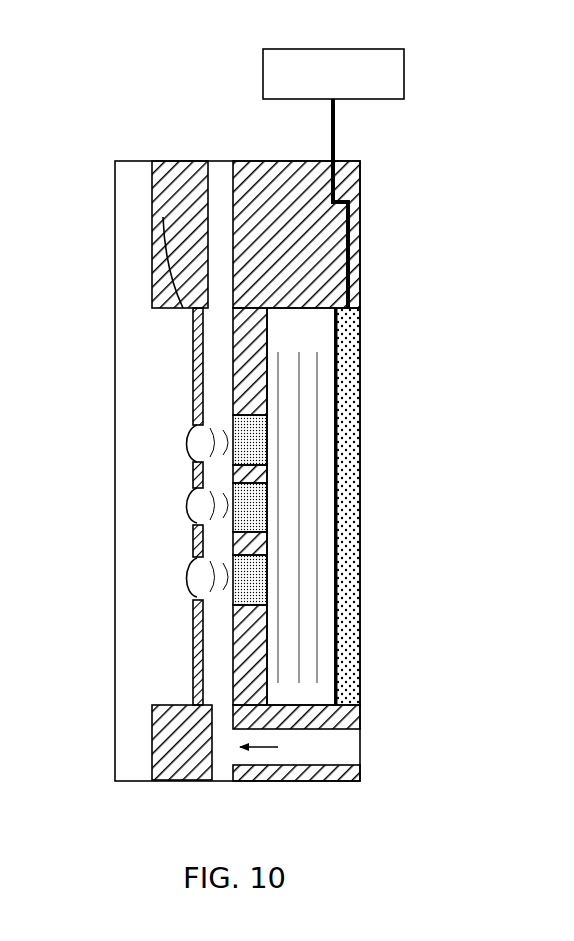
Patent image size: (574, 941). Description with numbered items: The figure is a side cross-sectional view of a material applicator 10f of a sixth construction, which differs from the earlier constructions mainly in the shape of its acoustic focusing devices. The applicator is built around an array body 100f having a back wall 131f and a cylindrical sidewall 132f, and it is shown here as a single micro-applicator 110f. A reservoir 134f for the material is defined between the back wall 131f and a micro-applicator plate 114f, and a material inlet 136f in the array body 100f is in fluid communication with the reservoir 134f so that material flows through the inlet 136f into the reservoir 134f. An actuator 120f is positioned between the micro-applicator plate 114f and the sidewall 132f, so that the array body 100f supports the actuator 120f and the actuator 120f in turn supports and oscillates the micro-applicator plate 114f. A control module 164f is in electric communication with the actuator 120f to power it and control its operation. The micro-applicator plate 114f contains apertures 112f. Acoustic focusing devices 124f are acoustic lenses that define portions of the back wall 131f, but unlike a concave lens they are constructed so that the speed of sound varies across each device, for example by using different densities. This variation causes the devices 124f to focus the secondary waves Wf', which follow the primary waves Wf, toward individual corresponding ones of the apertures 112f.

The material applicator 10f is at (133, 167).
The array body 100f is at (199, 159).
The micro-applicator 110f is at (163, 659).
The apertures 112f is at (193, 427).
The micro-applicator plate 114f is at (185, 372).
The actuator 120f is at (350, 375).
The acoustic focusing devices 124f is at (257, 431).
The back wall 131f is at (233, 648).
The sidewall 132f is at (187, 187).
The reservoir 134f is at (213, 368).
The material inlet 136f is at (338, 746).
The control module 164f is at (263, 70).
The fluid Wf is at (343, 506).
The secondary waves Wf' is at (332, 572).